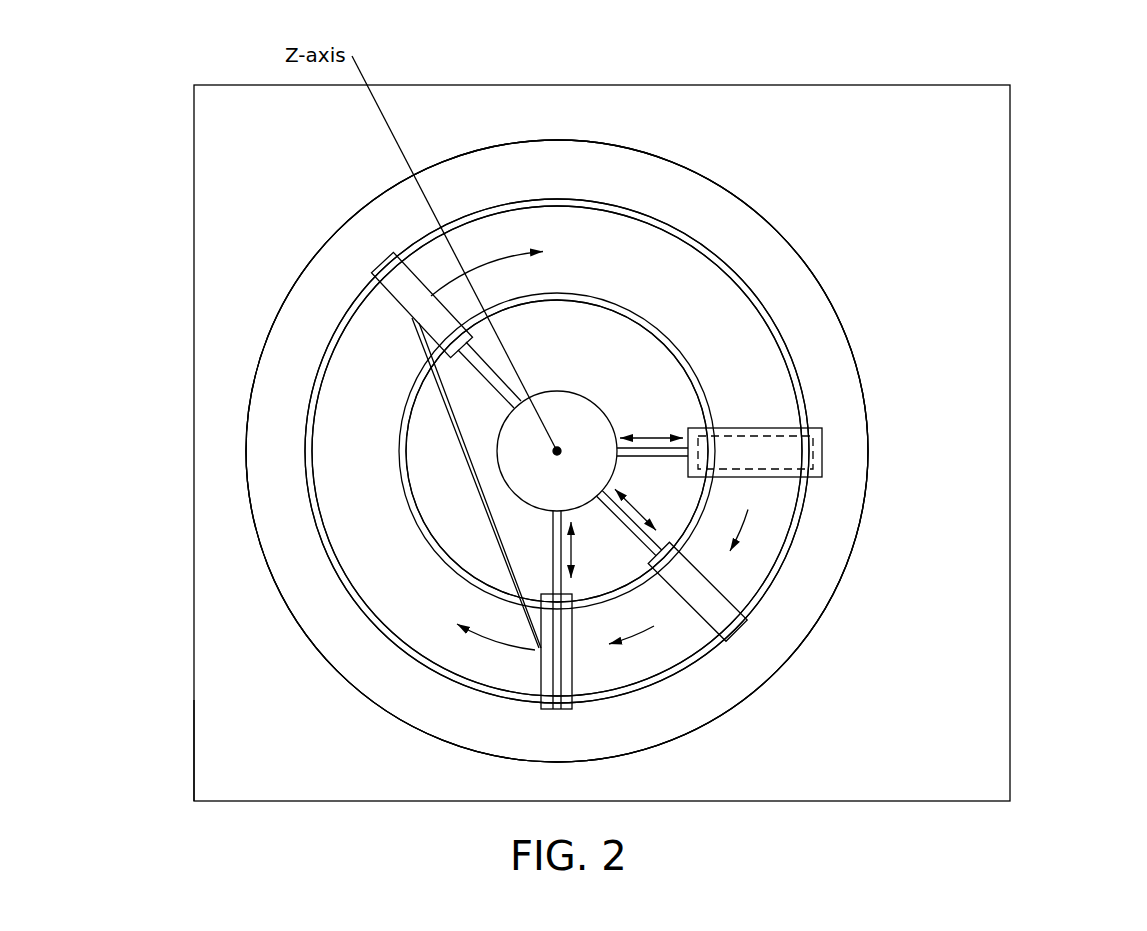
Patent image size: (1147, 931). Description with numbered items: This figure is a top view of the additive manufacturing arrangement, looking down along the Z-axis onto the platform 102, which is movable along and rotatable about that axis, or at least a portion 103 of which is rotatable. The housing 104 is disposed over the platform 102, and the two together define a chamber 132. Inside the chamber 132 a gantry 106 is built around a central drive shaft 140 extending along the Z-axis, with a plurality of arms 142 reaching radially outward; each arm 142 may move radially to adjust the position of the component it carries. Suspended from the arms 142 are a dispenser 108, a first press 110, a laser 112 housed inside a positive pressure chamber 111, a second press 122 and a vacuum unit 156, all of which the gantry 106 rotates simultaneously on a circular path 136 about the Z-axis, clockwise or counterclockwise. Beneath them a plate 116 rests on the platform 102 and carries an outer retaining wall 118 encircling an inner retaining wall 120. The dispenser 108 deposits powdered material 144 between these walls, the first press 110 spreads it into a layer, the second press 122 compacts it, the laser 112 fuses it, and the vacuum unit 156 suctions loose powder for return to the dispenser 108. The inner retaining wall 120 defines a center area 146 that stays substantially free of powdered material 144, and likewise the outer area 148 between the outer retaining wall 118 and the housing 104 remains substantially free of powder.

The platform 102 is at (862, 188).
The portion of the platform 103 is at (312, 320).
The housing 104 is at (194, 443).
The gantry 106 is at (557, 392).
The dispenser 108 is at (553, 668).
The first press 110 is at (568, 657).
The positive pressure chamber 111 is at (823, 449).
The laser 112 is at (725, 437).
The plate 116 is at (702, 282).
The outer retaining wall 118 is at (785, 357).
The inner retaining wall 120 is at (685, 358).
The second press 122 is at (710, 612).
The chamber 132 is at (237, 642).
The path 136 is at (510, 250).
The drive shaft 140 is at (603, 413).
The arms 142 is at (633, 458).
The powdered material 144 is at (637, 268).
The center area 146 is at (567, 323).
The outer area 148 is at (345, 257).
The vacuum unit 156 is at (375, 257).